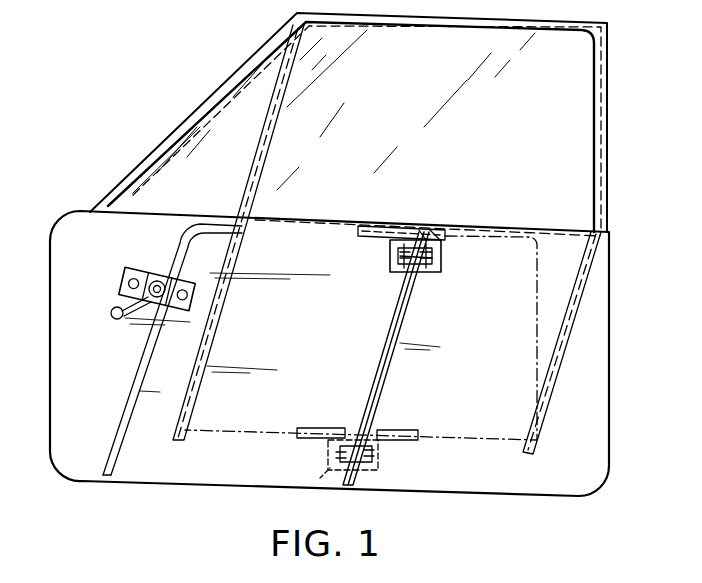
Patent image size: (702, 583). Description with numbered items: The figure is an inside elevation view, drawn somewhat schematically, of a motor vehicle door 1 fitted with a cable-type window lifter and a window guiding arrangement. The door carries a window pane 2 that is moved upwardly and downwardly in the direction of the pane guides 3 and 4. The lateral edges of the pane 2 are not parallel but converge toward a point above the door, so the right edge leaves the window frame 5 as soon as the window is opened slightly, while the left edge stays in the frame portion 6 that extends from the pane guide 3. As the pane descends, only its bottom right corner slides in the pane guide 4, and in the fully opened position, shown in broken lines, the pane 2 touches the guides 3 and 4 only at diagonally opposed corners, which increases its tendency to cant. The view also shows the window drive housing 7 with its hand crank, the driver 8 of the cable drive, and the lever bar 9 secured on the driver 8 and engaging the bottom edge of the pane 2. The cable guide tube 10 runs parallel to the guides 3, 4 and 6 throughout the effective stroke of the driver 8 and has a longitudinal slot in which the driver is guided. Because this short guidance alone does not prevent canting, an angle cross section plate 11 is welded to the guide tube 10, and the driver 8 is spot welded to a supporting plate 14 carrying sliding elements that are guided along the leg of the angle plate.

The door 1 is at (60, 330).
The window pane 2 is at (575, 80).
The pane guide 3 is at (183, 405).
The pane guide 4 is at (548, 413).
The window frame 5 is at (603, 150).
The frame portion 6 is at (281, 125).
The window drive housing 7 is at (137, 268).
The driver 8 is at (443, 257).
The lever bar 9 is at (375, 238).
The cable guide tube 10 is at (196, 235).
The angle cross section plate 11 is at (391, 373).
The supporting plate 14 is at (398, 272).